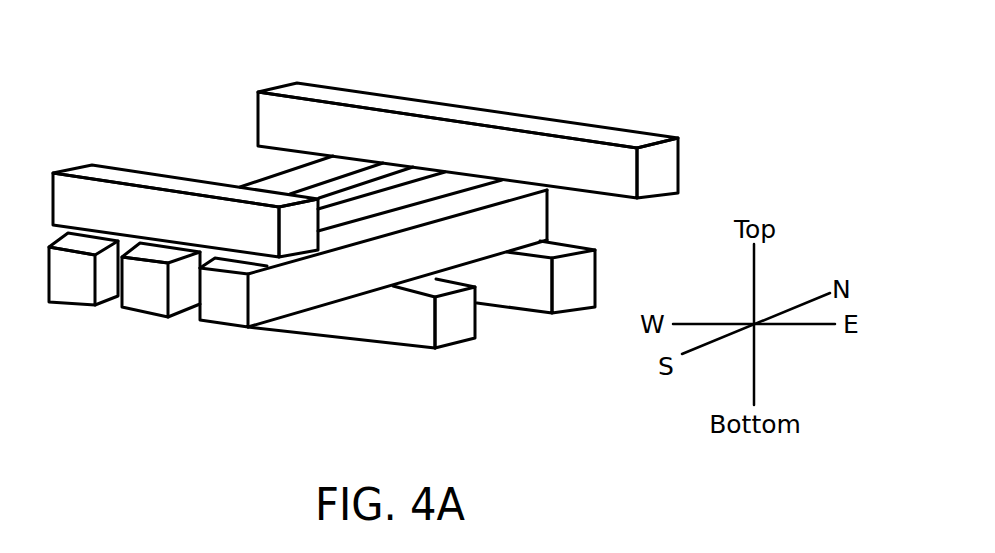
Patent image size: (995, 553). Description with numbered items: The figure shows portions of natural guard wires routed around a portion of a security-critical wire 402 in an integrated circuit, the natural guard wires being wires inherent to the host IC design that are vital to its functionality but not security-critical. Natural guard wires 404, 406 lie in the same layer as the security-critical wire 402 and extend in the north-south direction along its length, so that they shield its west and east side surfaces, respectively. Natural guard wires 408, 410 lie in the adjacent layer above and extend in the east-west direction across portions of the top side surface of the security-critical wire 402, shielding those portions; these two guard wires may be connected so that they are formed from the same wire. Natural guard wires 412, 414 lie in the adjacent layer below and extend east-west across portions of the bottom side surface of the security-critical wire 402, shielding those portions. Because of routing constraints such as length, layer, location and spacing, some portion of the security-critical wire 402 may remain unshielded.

The security-critical wire 402 is at (152, 318).
The natural guard wire 404 is at (72, 306).
The natural guard wire 406 is at (230, 328).
The natural guard wire 408 is at (128, 165).
The natural guard wire 410 is at (362, 88).
The natural guard wire 412 is at (375, 346).
The natural guard wire 414 is at (542, 314).